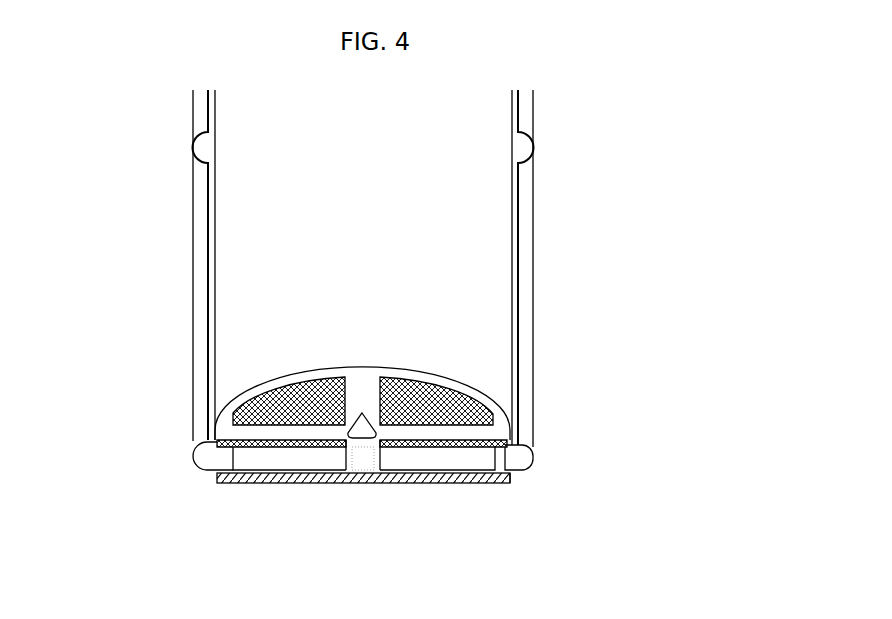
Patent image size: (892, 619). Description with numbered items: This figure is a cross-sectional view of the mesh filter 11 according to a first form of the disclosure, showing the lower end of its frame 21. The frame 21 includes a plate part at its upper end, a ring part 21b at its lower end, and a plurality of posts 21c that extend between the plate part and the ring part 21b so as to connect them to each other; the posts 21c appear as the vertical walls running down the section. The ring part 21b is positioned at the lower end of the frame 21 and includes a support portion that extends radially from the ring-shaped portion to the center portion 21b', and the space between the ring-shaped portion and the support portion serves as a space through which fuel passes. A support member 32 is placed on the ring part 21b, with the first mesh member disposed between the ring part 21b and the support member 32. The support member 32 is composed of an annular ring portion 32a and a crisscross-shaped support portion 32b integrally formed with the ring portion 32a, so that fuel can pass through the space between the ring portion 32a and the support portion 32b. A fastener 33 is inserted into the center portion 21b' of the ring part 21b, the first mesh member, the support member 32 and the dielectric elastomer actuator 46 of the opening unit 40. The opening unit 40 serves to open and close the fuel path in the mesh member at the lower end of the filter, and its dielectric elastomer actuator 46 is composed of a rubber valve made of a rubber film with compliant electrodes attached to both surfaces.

The mesh filter 11 is at (548, 200).
The frame 21 is at (192, 307).
The posts 21c is at (531, 288).
The ring part 21b is at (352, 496).
The center portion 21b' is at (394, 501).
The support member 32 is at (263, 282).
The ring portion 32a is at (277, 378).
The support portion 32b is at (362, 378).
The fastener 33 is at (366, 425).
The opening unit 40 is at (335, 484).
The dielectric elastomer actuator 46 is at (484, 483).